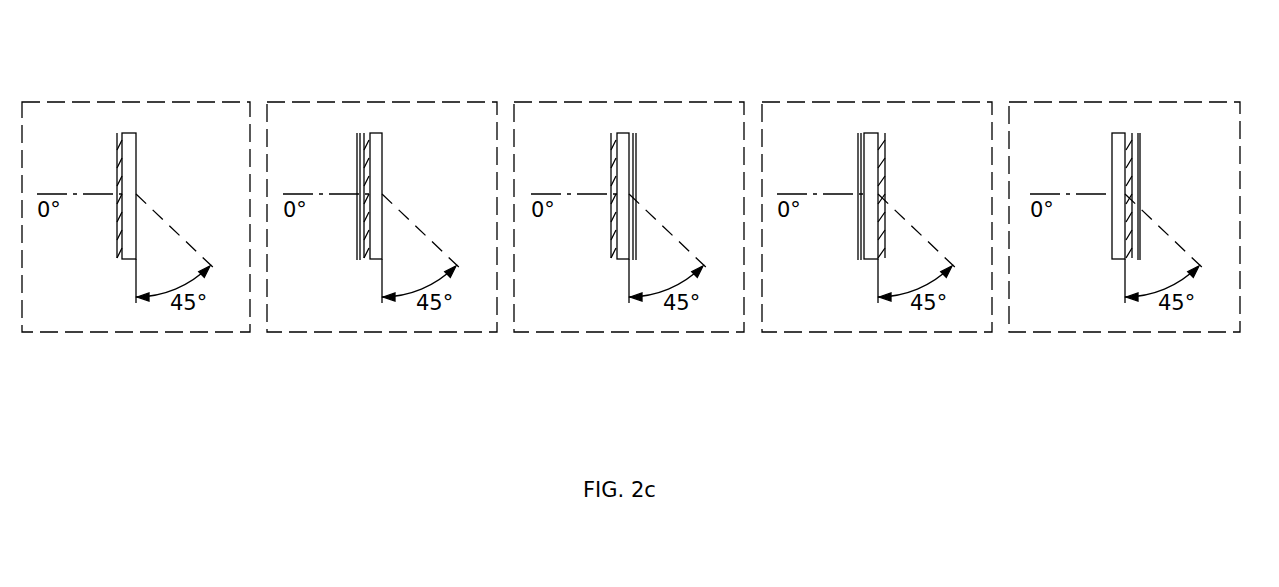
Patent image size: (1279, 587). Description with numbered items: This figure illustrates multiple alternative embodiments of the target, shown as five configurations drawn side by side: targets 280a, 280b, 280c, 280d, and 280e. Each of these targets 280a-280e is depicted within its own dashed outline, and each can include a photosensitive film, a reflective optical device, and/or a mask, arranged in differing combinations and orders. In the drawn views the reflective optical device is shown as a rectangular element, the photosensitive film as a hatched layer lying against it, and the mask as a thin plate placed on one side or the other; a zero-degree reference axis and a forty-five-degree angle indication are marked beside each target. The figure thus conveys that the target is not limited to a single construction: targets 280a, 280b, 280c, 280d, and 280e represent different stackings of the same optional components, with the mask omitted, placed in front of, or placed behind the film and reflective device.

The target 280a is at (113, 102).
The target 280b is at (361, 102).
The target 280c is at (562, 102).
The target 280d is at (807, 102).
The target 280e is at (1033, 102).